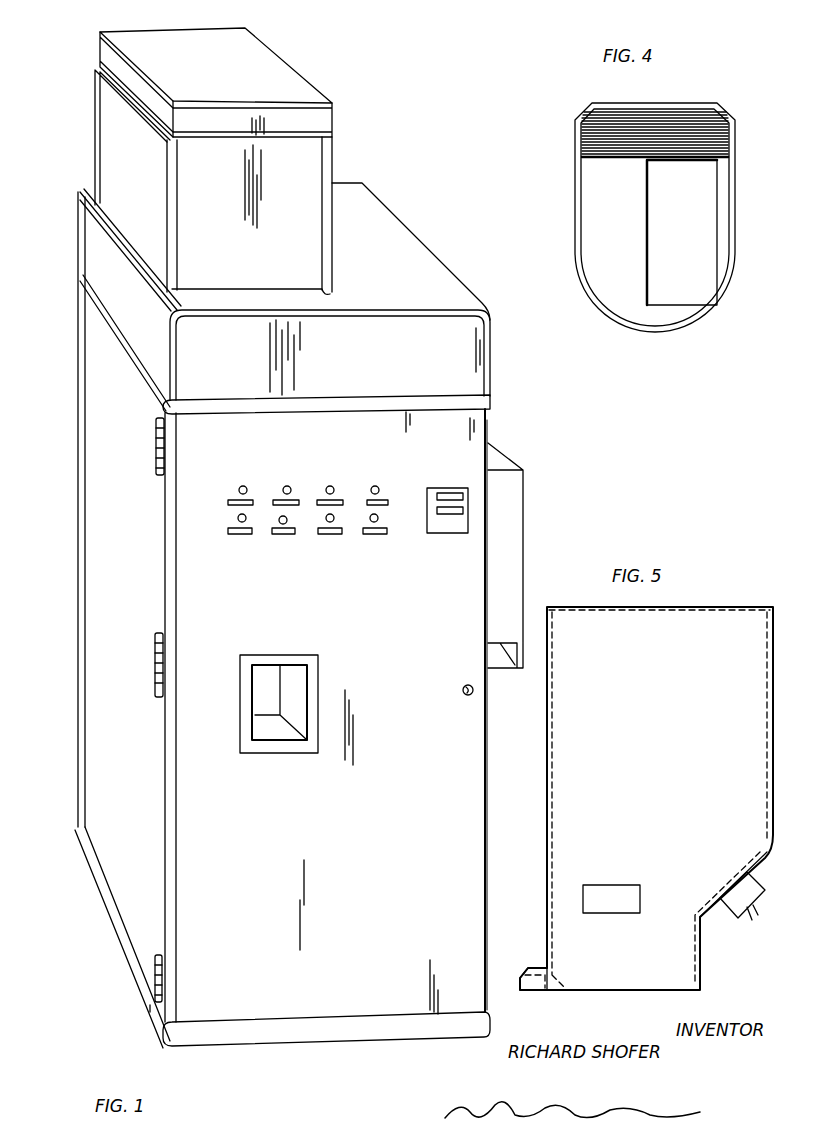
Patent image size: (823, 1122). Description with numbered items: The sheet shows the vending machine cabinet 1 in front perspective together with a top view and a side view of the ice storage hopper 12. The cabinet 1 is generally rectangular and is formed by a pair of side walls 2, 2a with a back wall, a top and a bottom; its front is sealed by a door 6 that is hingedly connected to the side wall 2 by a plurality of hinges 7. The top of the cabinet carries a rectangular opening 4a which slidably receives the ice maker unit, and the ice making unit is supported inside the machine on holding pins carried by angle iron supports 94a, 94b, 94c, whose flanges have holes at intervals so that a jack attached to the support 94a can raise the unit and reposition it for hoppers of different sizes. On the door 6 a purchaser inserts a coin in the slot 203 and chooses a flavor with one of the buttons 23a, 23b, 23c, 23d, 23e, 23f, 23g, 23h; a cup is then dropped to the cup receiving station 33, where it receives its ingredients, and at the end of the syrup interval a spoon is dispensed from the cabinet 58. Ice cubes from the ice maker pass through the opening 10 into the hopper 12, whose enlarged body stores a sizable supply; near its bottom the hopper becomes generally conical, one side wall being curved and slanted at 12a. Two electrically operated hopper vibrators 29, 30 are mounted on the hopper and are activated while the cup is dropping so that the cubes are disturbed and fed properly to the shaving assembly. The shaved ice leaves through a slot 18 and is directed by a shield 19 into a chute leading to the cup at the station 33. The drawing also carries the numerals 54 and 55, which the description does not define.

In FIG. 1, the cabinet 1 is at (470, 747).
In FIG. 1, the side wall 2 is at (105, 585).
In FIG. 1, the side wall 2a is at (485, 884).
In FIG. 1, the rectangular opening 4a is at (333, 293).
In FIG. 1, the door 6 is at (460, 808).
In FIG. 1, the hinges 7 is at (157, 436).
In FIG. 4, the opening 10 is at (682, 232).
In FIG. 4, the hopper 12 is at (640, 203).
In FIG. 5, the hopper 12 is at (639, 817).
In FIG. 4, the curved and slanted side wall 12a is at (630, 110).
In FIG. 5, the curved and slanted side wall 12a is at (760, 854).
In FIG. 5, the slot 18 is at (553, 992).
In FIG. 5, the shield 19 is at (538, 992).
In FIG. 1, the button 23a is at (258, 477).
In FIG. 1, the button 23b is at (290, 487).
In FIG. 1, the button 23c is at (345, 478).
In FIG. 1, the button 23d is at (378, 487).
In FIG. 1, the button 23e is at (238, 520).
In FIG. 1, the button 23f is at (279, 522).
In FIG. 1, the button 23g is at (334, 518).
In FIG. 1, the button 23h is at (378, 518).
In FIG. 5, the hopper vibrator 29 is at (740, 917).
In FIG. 5, the hopper vibrator 30 is at (612, 890).
In FIG. 1, the cup receiving station 33 is at (297, 665).
In FIG. 1, the cabinet top 54 is at (395, 249).
In FIG. 1, the base 55 is at (326, 1040).
In FIG. 1, the cabinet 58 is at (332, 159).
In FIG. 1, the angle iron support 94a is at (175, 268).
In FIG. 1, the angle iron support 94b is at (330, 248).
In FIG. 1, the angle iron support 94c is at (97, 178).
In FIG. 1, the slot 203 is at (440, 530).